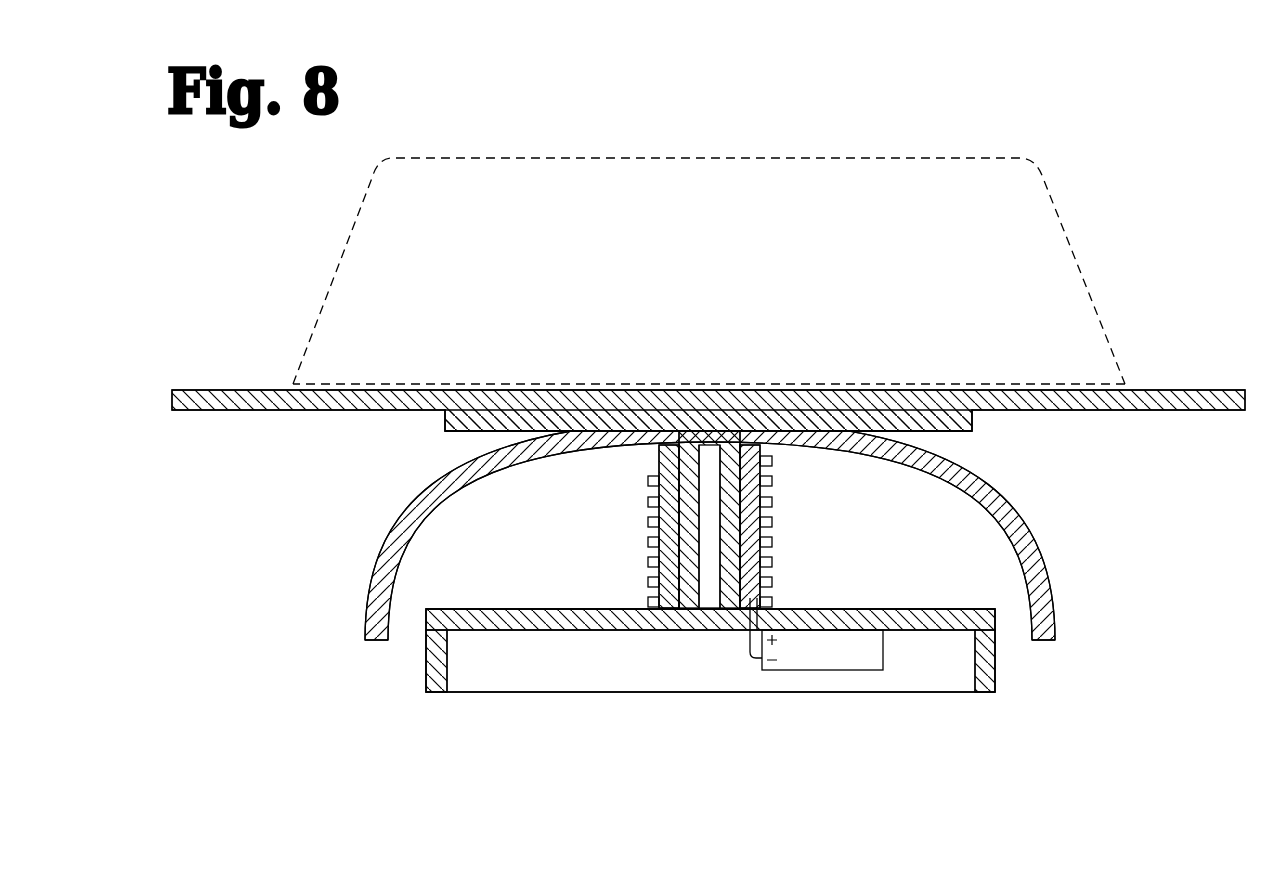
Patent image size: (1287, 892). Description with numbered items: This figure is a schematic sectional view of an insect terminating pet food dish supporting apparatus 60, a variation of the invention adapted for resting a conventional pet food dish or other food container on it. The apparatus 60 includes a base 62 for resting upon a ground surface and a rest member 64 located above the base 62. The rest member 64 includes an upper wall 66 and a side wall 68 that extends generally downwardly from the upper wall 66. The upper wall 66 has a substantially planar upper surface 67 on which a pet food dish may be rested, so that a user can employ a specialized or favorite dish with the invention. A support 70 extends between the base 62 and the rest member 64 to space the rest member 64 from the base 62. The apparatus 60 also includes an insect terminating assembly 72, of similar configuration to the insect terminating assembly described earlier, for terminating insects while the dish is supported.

The insect terminating pet food dish supporting apparatus 60 is at (708, 467).
The base 62 is at (698, 660).
The rest member 64 is at (953, 372).
The upper wall 66 is at (708, 445).
The upper surface 67 is at (730, 400).
The side wall 68 is at (990, 506).
The support 70 is at (655, 490).
The insect terminating assembly 72 is at (802, 553).